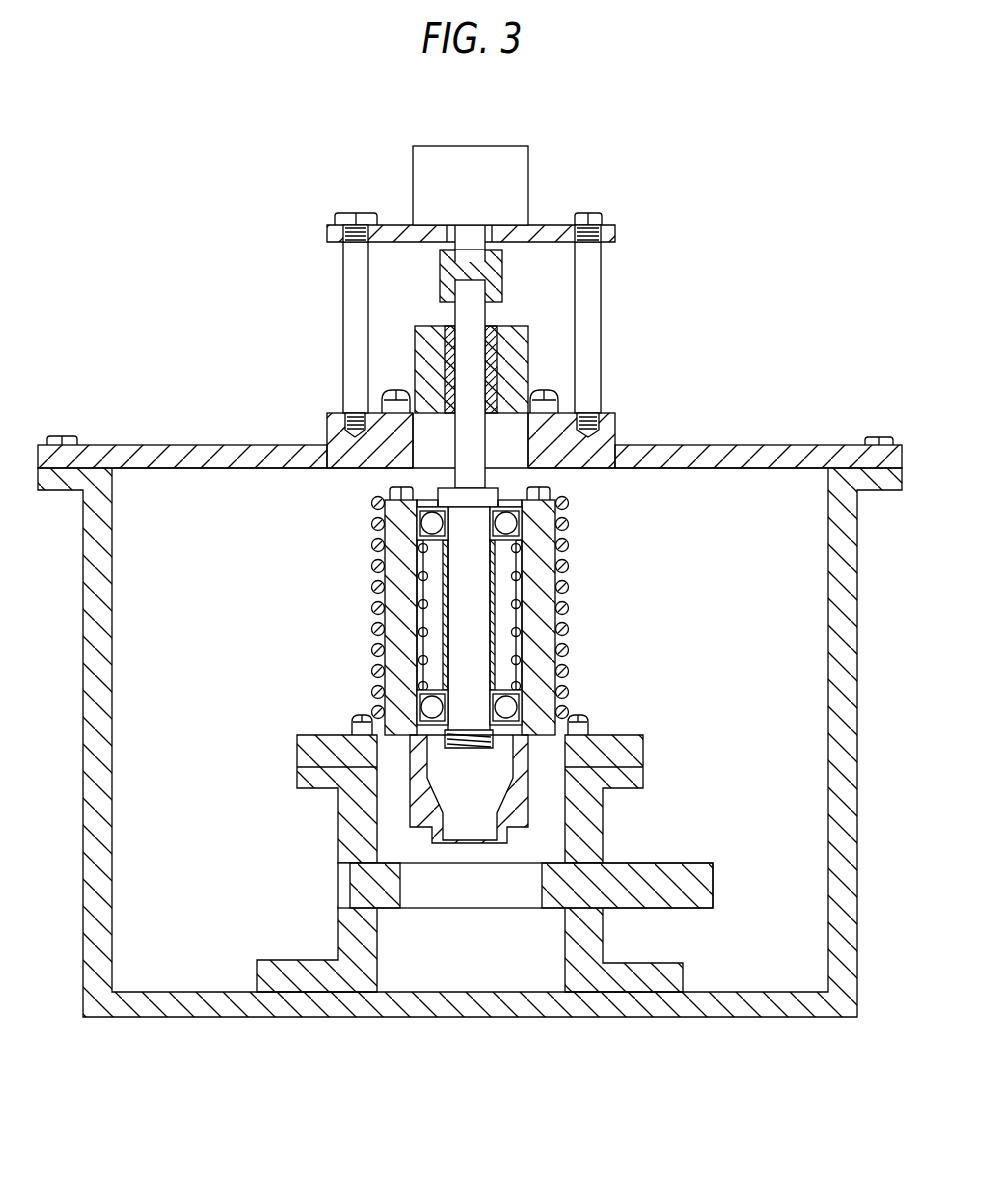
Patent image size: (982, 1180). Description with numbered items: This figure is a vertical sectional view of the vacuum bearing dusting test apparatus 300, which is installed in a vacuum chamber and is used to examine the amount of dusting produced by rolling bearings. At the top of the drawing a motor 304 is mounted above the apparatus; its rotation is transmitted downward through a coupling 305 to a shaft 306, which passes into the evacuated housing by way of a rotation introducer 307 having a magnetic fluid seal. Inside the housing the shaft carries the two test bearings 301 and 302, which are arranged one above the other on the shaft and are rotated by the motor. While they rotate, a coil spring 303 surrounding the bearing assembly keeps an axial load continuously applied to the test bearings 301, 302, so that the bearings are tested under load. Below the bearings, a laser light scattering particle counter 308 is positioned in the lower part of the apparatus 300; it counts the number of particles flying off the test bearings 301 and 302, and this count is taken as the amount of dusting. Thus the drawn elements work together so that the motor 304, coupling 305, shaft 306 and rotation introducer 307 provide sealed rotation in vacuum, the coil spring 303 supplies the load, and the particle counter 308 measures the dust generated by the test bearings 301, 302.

The vacuum bearing dusting test apparatus 300 is at (800, 411).
The test bearing 301 is at (508, 523).
The test bearing 302 is at (508, 708).
The coil spring 303 is at (417, 614).
The motor 304 is at (512, 177).
The coupling 305 is at (502, 273).
The shaft 306 is at (473, 453).
The rotation introducer 307 is at (522, 337).
The laser light scattering particle counter 308 is at (360, 889).